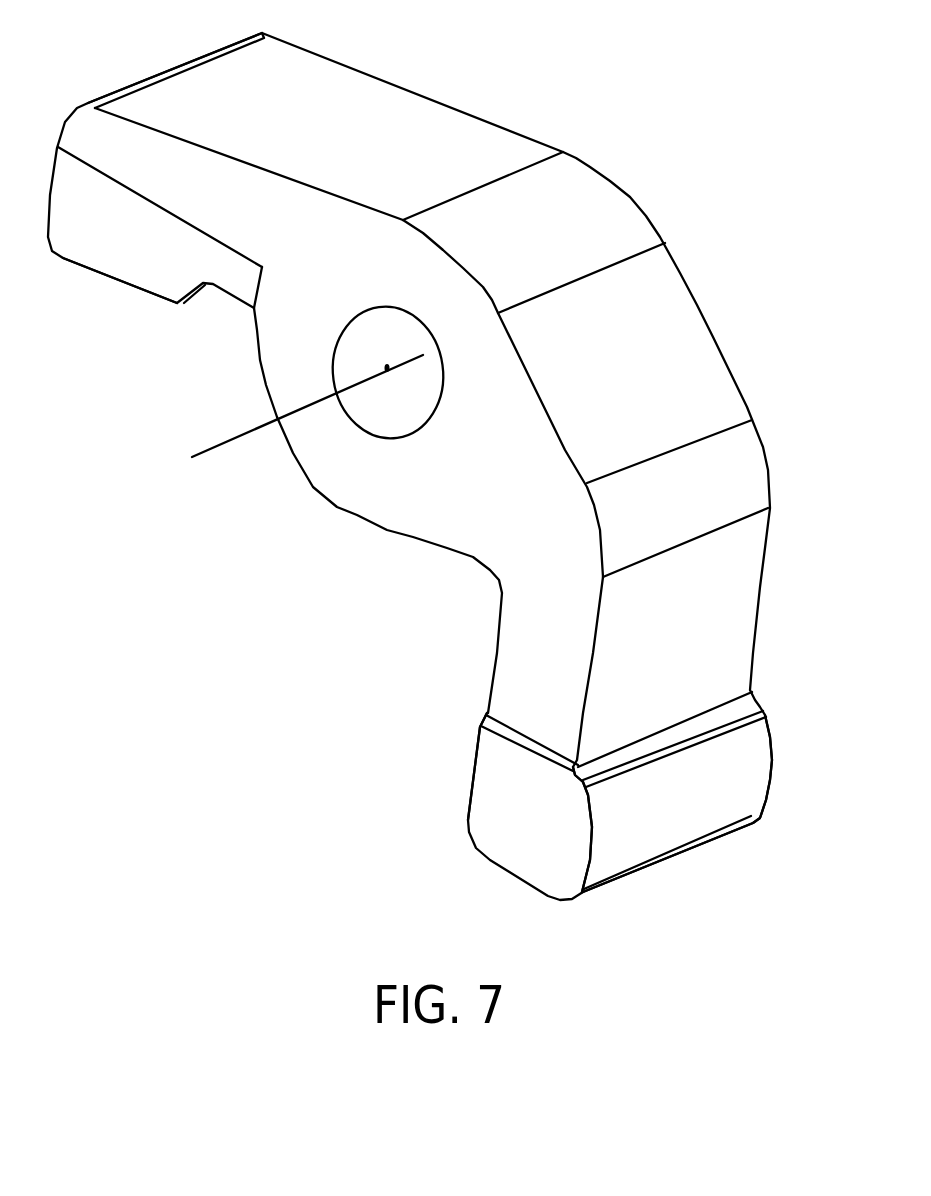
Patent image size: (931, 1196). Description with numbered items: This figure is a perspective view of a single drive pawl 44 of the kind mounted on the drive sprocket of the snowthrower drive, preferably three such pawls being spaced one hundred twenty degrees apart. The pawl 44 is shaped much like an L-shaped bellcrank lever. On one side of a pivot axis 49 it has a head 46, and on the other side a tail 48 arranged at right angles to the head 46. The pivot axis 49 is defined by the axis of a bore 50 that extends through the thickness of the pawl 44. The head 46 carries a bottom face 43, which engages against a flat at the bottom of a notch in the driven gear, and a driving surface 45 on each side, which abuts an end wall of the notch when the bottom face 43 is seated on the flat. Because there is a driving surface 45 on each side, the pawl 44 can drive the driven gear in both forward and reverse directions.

The bottom face 43 is at (113, 280).
The pawl 44 is at (444, 463).
The driving surface 45 is at (118, 247).
The head 46 is at (135, 82).
The tail 48 is at (742, 760).
The pivot axis 49 is at (240, 440).
The bore 50 is at (380, 307).